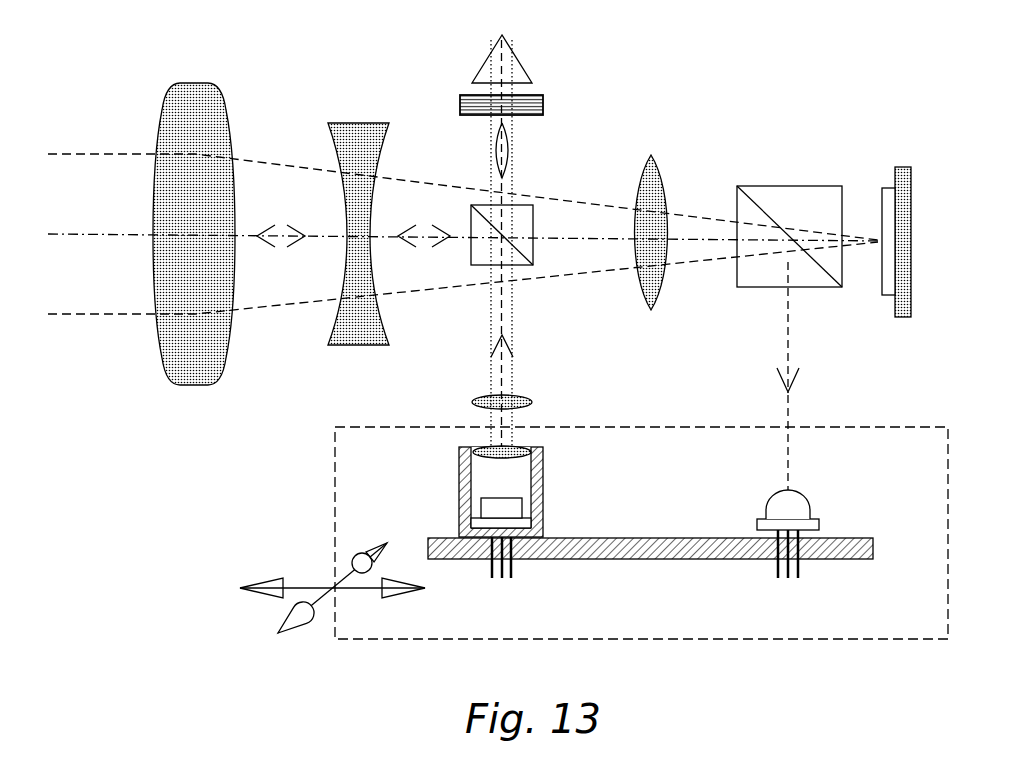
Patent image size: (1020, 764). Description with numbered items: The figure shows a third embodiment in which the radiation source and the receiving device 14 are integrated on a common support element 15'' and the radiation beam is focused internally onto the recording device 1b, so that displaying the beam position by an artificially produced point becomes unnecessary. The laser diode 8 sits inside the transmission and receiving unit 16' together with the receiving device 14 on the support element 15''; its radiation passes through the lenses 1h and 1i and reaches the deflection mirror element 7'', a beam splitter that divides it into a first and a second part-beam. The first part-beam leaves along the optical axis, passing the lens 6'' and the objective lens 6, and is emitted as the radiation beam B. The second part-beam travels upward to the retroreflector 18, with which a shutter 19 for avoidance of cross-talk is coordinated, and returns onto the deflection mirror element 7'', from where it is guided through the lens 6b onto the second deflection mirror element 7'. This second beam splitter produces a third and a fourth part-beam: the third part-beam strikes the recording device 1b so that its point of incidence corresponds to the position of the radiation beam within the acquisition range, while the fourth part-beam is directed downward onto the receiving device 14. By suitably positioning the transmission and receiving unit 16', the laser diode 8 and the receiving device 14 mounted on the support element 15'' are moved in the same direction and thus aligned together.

The objective lens 6 is at (231, 216).
The lens 6'' is at (319, 223).
The retroreflector 18 is at (551, 59).
The shutter 19 is at (507, 108).
The deflection mirror element 7'' is at (558, 277).
The lens 6b is at (699, 226).
The second deflection mirror element 7' is at (831, 269).
The recording device 1b is at (855, 211).
The lens 1i is at (556, 387).
The lens 1h is at (428, 421).
The laser diode 8 is at (451, 497).
The receiving device 14 is at (842, 519).
The support element 15'' is at (650, 576).
The transmission and receiving unit 16' is at (547, 533).
The light beam B is at (466, 234).